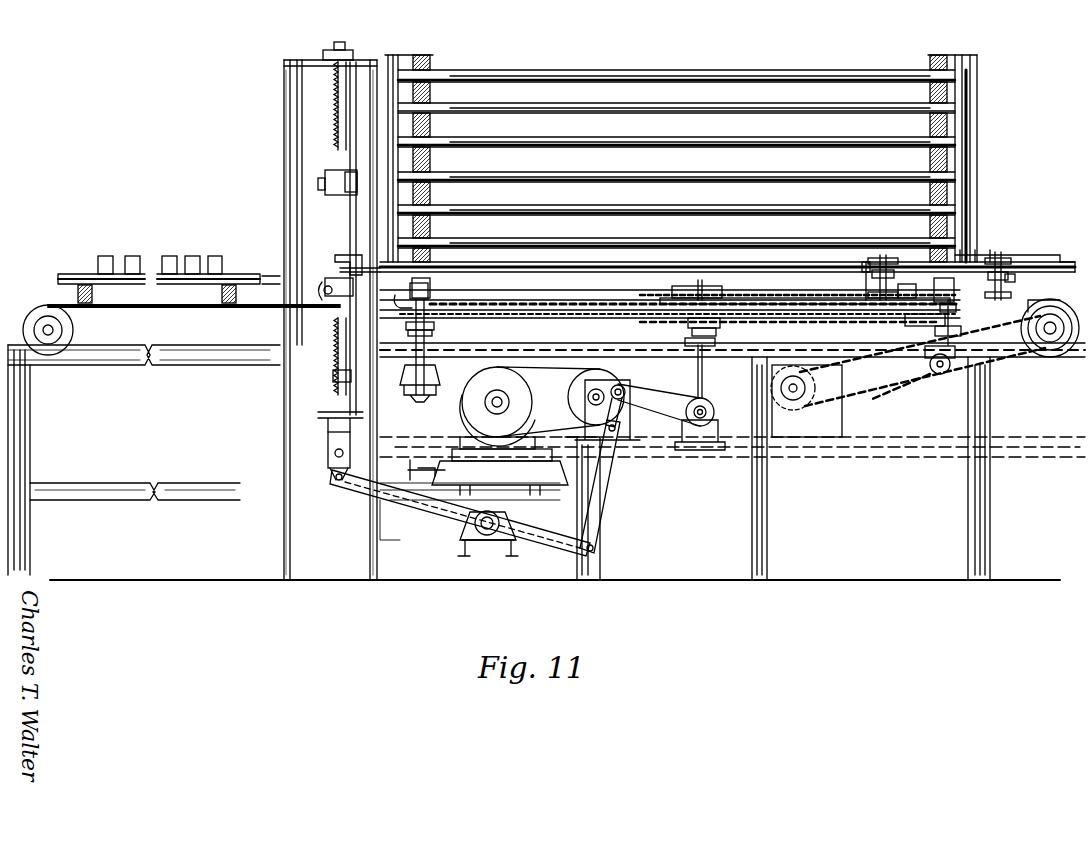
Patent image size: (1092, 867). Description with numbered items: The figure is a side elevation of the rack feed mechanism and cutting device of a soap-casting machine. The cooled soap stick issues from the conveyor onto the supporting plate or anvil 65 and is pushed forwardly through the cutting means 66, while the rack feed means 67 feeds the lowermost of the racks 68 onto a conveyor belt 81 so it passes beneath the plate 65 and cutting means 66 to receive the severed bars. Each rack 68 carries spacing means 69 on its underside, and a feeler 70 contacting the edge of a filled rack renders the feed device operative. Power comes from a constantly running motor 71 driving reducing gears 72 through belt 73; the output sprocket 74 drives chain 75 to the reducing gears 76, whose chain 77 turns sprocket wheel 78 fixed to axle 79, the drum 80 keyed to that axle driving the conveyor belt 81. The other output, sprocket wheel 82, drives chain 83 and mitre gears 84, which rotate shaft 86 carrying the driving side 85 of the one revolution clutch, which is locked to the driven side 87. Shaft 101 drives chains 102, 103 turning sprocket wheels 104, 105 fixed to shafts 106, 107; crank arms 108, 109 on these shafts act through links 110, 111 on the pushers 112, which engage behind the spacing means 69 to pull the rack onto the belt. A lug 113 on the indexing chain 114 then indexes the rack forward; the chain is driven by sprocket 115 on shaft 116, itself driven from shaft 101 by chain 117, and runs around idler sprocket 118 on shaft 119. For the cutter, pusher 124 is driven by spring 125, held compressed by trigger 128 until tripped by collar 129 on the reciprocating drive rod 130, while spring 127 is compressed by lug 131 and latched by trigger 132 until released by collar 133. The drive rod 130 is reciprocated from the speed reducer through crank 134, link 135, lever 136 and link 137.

The supporting plate or anvil 65 is at (340, 270).
The cutting means 66 is at (368, 55).
The rack feed means 67 is at (576, 172).
The racks 68 is at (520, 78).
The spacing means 69 is at (432, 128).
The feeler 70 is at (340, 258).
The motor 71 is at (480, 396).
The reducing gears 72 is at (590, 412).
The belt 73 is at (538, 365).
The output sprocket 74 is at (586, 396).
The chain 75 is at (662, 382).
The reducing gears 76 is at (838, 405).
The chain 77 is at (910, 378).
The sprocket wheel 78 is at (1028, 328).
The axle 79 is at (1045, 342).
The drum 80 is at (1030, 346).
The conveyor belt 81 is at (60, 302).
The sprocket wheel 82 is at (645, 396).
The chain 83 is at (655, 420).
The mitre gears 84 is at (706, 445).
The driving side of one revolution clutch 85 is at (720, 340).
The shaft 86 is at (698, 366).
The driven side of one revolution clutch 87 is at (688, 325).
The shaft 101 is at (698, 292).
The chain 102 is at (500, 318).
The chain 103 is at (797, 318).
The sprocket wheel 104 is at (412, 320).
The sprocket wheel 105 is at (905, 320).
The shaft 106 is at (430, 325).
The shaft 107 is at (944, 370).
The crank arm 108 is at (402, 302).
The crank arm 109 is at (960, 322).
The link 110 is at (435, 300).
The link 111 is at (956, 306).
The pushers 112 is at (448, 275).
The lug 113 is at (900, 292).
The indexing chain 114 is at (965, 260).
The sprocket 115 is at (866, 282).
The shaft 116 is at (884, 258).
The chain 117 is at (740, 306).
The idler sprocket 118 is at (1012, 278).
The shaft 119 is at (998, 256).
The pusher 124 is at (335, 148).
The spring 125 is at (334, 95).
The spring 127 is at (332, 395).
The trigger 128 is at (326, 185).
The collar 129 is at (352, 185).
The reciprocating drive rod 130 is at (332, 358).
The lug 131 is at (328, 294).
The trigger 132 is at (325, 286).
The collar 133 is at (352, 380).
The crank 134 is at (580, 448).
The link 135 is at (607, 492).
The lever 136 is at (440, 520).
The link 137 is at (328, 462).